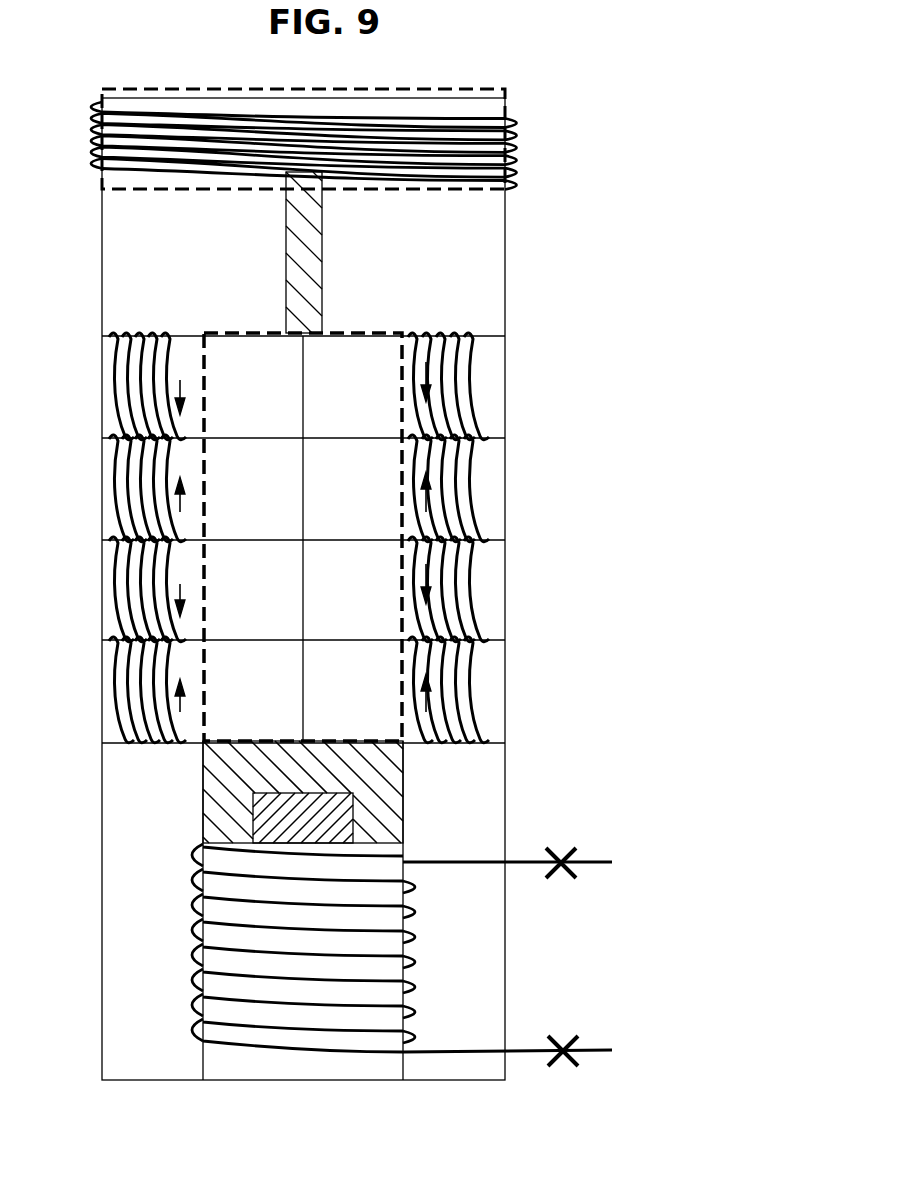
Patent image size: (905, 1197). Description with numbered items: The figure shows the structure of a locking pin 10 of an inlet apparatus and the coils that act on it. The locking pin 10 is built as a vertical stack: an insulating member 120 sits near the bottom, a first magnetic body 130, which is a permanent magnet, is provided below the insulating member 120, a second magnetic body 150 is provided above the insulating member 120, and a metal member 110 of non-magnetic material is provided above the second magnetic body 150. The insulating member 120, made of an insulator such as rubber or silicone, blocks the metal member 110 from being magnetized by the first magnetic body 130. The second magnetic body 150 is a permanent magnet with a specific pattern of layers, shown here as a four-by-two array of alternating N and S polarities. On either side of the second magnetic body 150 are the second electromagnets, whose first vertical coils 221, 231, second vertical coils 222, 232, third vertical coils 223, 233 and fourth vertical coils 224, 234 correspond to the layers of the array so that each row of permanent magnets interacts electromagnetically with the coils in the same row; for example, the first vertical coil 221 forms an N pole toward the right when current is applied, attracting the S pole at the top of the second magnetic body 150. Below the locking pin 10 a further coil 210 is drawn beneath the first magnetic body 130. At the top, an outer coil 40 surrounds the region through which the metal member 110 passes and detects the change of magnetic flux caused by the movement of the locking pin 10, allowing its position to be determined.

The locking pin 10 is at (355, 295).
The outer coil 40 is at (520, 168).
The metal member 110 is at (290, 236).
The second magnetic body 150 is at (398, 333).
The insulating member 120 is at (396, 783).
The first magnetic body 130 is at (348, 836).
The coil 210 is at (185, 932).
The first vertical coil 221 is at (116, 350).
The second vertical coil 222 is at (116, 453).
The third vertical coil 223 is at (116, 555).
The fourth vertical coil 224 is at (116, 657).
The first vertical coil 231 is at (487, 400).
The second vertical coil 232 is at (487, 500).
The third vertical coil 233 is at (487, 600).
The fourth vertical coil 234 is at (487, 700).